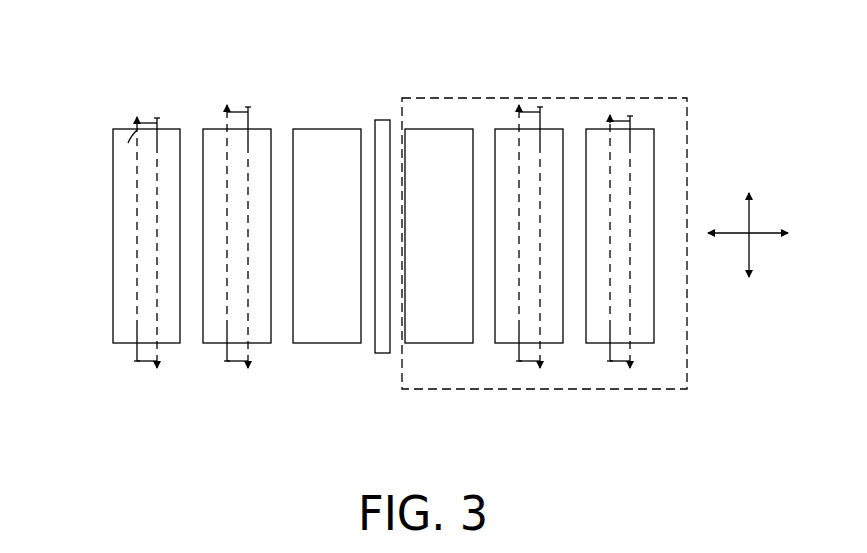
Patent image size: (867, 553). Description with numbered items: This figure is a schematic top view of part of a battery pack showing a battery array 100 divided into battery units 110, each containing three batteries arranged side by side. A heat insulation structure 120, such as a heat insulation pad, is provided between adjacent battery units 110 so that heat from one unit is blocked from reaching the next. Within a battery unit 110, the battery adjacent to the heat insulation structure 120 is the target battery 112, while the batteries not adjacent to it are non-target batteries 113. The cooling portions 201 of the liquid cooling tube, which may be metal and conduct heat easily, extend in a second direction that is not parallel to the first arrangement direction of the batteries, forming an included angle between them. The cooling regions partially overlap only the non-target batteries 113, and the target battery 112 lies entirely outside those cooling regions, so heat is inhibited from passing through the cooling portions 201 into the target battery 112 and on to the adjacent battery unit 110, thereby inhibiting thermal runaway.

The battery array 100 is at (94, 57).
The battery unit 110 is at (649, 98).
The target battery 112 is at (307, 343).
The non-target battery 113 is at (222, 138).
The heat insulation structure 120 is at (380, 350).
The cooling portion 201 is at (140, 222).